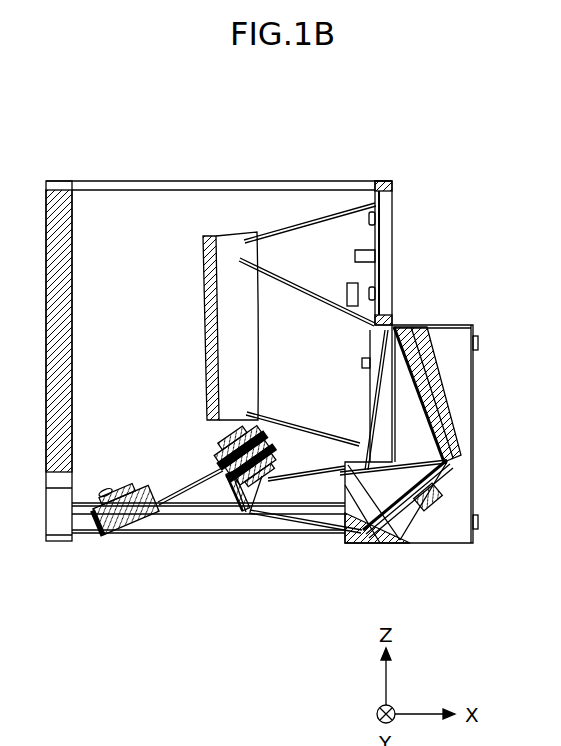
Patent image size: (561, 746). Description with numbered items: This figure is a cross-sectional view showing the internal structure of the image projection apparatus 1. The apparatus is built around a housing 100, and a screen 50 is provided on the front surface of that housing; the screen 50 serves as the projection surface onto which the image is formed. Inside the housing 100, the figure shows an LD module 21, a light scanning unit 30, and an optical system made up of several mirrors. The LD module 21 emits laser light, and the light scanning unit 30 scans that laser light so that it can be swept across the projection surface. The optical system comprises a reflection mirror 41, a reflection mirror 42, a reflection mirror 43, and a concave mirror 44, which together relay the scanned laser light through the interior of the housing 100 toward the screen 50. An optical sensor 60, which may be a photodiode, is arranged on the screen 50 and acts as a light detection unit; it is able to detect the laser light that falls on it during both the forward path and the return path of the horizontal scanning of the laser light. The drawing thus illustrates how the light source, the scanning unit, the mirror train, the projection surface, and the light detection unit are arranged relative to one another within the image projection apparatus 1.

The image projection apparatus 1 is at (78, 147).
The housing 100 is at (295, 182).
The screen 50 is at (394, 238).
The optical sensor 60 is at (358, 284).
The concave mirror 44 is at (225, 245).
The reflection mirror 43 is at (430, 392).
The reflection mirror 42 is at (447, 470).
The reflection mirror 41 is at (240, 512).
The light scanning unit 30 is at (205, 435).
The LD module 21 is at (130, 538).